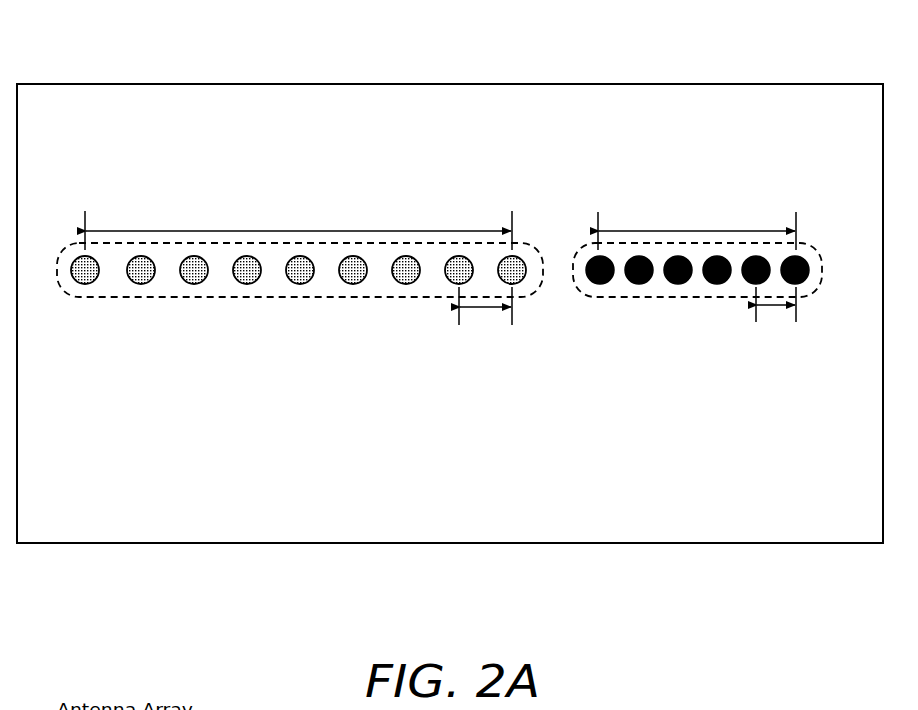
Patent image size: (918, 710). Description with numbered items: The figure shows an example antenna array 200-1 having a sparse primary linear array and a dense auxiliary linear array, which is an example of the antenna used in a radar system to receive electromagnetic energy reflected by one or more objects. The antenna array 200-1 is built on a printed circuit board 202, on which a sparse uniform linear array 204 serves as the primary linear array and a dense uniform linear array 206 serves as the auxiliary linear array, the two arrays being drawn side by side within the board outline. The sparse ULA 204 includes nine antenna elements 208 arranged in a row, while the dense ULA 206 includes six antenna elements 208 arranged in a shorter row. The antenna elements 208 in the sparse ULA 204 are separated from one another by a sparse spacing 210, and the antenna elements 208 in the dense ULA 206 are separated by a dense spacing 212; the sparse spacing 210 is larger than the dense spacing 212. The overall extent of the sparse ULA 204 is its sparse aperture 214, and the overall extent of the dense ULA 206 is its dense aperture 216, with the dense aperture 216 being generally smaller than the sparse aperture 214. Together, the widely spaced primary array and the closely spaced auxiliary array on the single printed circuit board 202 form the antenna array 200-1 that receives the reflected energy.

The antenna array 200-1 is at (233, 56).
The printed circuit board 202 is at (453, 543).
The sparse uniform linear array 204 is at (300, 345).
The dense uniform linear array 206 is at (602, 294).
The antenna element 208 is at (141, 284).
The sparse spacing 210 is at (487, 308).
The dense spacing 212 is at (775, 308).
The sparse aperture 214 is at (297, 230).
The dense aperture 216 is at (697, 230).